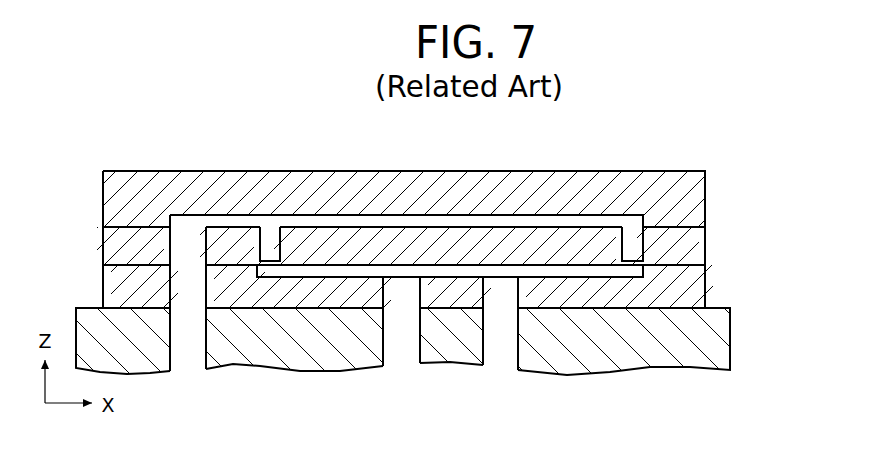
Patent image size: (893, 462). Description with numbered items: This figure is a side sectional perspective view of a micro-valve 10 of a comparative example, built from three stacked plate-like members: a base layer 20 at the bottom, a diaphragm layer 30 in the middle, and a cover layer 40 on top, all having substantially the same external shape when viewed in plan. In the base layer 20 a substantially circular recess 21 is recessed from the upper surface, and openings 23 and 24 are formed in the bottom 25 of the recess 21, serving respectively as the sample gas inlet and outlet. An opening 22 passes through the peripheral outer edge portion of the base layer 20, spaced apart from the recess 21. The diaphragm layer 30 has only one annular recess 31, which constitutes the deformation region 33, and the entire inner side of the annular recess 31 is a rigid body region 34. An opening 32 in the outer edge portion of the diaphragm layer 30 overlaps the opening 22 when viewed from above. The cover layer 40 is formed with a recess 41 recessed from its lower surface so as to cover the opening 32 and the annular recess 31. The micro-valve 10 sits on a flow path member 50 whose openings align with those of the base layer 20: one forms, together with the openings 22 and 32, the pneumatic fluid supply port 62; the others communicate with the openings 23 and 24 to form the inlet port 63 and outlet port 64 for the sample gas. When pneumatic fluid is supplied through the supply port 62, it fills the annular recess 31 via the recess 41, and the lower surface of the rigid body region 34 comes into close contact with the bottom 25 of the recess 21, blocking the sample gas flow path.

The micro-valve 10 is at (714, 139).
The base layer 20 is at (693, 287).
The recess 21 is at (261, 279).
The opening 22 is at (173, 280).
The opening 23 is at (384, 294).
The opening 24 is at (517, 294).
The bottom 25 is at (602, 278).
The diaphragm layer 30 is at (697, 247).
The annular recess 31 is at (268, 229).
The opening 32 is at (173, 243).
The deformation region 33 is at (628, 258).
The rigid body region 34 is at (447, 227).
The cover layer 40 is at (697, 199).
The recess 41 is at (172, 216).
The flow path member 50 is at (717, 341).
The supply port 62 is at (188, 376).
The inlet port 63 is at (403, 372).
The outlet port 64 is at (500, 376).